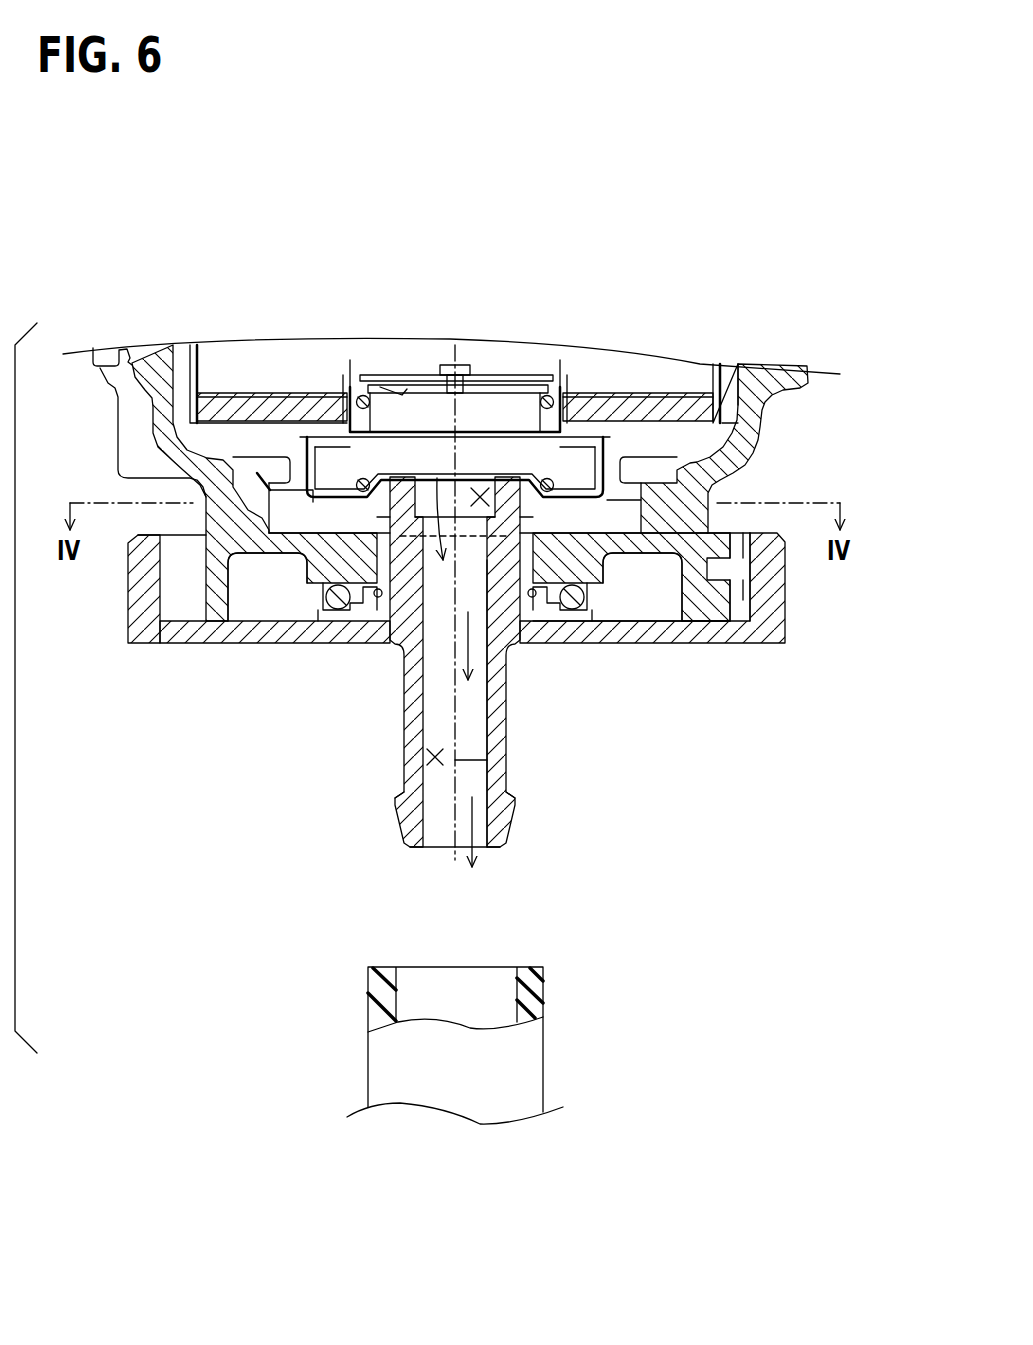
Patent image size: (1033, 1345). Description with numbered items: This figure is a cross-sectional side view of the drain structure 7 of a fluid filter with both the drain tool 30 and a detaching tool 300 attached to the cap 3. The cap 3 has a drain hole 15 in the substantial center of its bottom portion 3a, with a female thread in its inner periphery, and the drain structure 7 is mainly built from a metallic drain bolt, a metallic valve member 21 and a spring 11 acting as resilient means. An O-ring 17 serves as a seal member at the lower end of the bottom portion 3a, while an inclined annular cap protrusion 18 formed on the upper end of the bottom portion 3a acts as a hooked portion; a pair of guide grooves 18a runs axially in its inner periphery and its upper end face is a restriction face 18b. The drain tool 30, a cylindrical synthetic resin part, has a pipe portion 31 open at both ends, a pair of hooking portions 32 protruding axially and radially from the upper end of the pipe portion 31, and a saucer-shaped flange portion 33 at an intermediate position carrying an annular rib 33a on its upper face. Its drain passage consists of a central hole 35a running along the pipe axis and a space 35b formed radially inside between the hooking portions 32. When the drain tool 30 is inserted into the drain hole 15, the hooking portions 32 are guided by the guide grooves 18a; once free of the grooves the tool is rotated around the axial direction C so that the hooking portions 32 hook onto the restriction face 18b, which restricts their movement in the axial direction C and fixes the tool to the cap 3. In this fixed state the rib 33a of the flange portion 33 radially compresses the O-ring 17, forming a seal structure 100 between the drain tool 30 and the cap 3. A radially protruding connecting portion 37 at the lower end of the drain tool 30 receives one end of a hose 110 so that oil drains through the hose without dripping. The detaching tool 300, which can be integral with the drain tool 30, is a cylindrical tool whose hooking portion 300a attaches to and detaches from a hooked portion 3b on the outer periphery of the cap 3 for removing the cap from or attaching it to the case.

The cap 3 is at (752, 438).
The bottom portion 3a is at (320, 550).
The hooked portion 3b is at (733, 570).
The drain structure 7 is at (558, 665).
The spring 11 is at (405, 495).
The drain hole 15 is at (392, 625).
The O-ring 17 is at (652, 629).
The cap protrusion 18 is at (318, 436).
The guide groove 18a is at (437, 475).
The restriction face 18b is at (530, 436).
The valve member 21 is at (311, 505).
The drain tool 30 is at (515, 736).
The pipe portion 31 is at (503, 705).
The hooking portion 32 is at (393, 433).
The flange portion 33 is at (580, 630).
The rib 33a is at (350, 612).
The central hole 35a is at (433, 767).
The space 35b is at (479, 490).
The connecting portion 37 is at (500, 820).
The seal structure 100 is at (622, 632).
The hose 110 is at (543, 1060).
The detaching tool 300 is at (785, 600).
The hooking portion 300a is at (745, 540).
The axial direction C is at (512, 769).